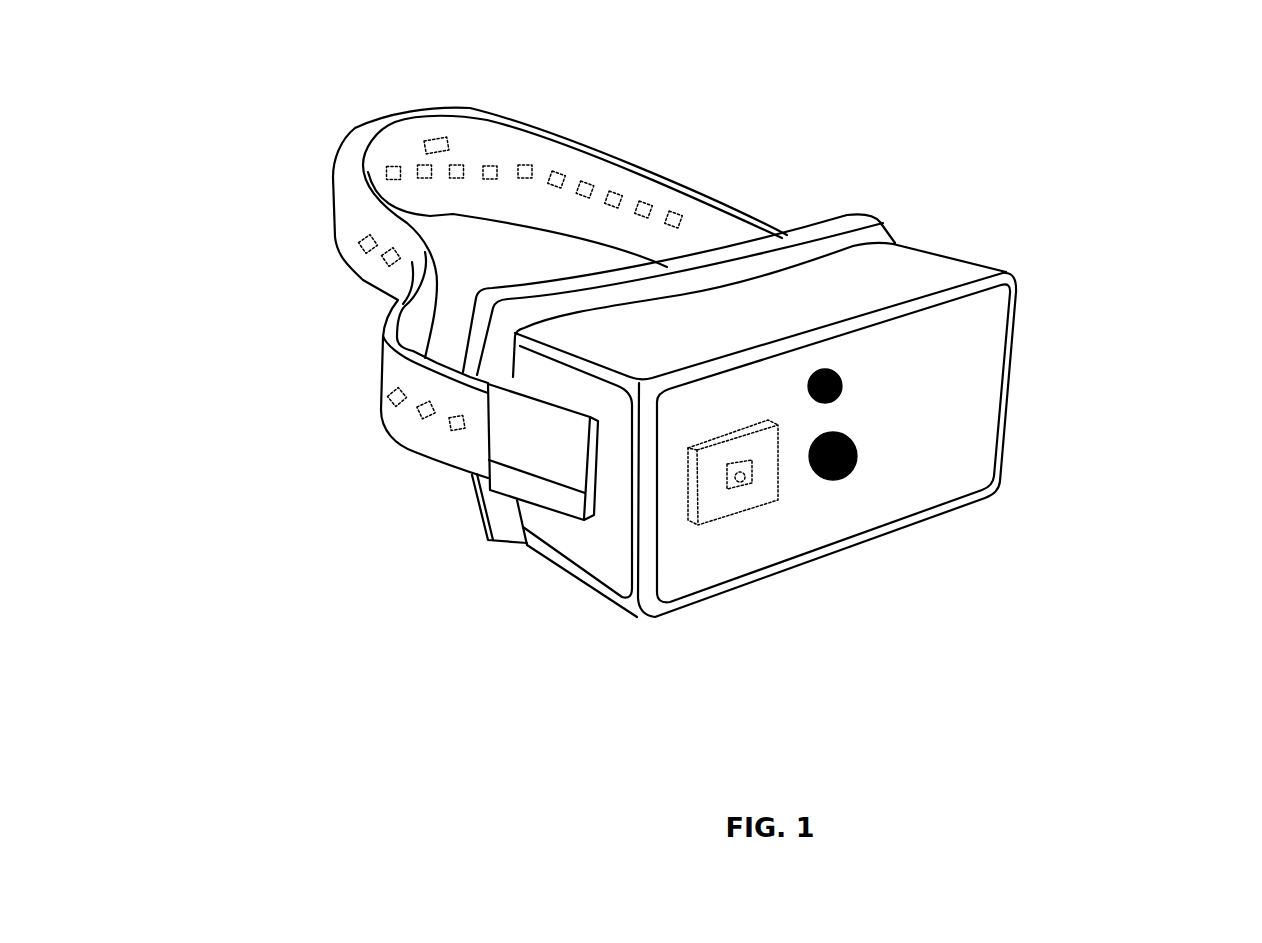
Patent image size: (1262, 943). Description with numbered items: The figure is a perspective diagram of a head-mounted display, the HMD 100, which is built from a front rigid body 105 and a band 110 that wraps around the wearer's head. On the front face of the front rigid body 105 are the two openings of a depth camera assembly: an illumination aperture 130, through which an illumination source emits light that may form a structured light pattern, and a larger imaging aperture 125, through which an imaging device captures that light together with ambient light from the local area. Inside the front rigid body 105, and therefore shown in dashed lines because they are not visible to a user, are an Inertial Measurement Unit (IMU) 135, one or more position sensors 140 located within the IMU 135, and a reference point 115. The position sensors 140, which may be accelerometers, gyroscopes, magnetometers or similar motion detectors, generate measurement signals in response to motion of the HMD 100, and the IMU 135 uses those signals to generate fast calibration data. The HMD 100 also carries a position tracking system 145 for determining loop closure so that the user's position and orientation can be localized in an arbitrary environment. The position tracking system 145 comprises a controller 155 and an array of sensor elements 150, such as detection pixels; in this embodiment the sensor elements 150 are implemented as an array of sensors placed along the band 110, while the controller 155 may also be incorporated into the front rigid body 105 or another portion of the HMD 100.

The head-mounted display (HMD) 100 is at (1092, 96).
The front rigid body 105 is at (1012, 272).
The band 110 is at (680, 183).
The reference point 115 is at (742, 483).
The imaging aperture 125 is at (857, 458).
The illumination aperture 130 is at (840, 374).
The Inertial Measurement Unit (IMU) 135 is at (780, 492).
The position sensors 140 is at (729, 492).
The position tracking system 145 is at (416, 155).
The sensor elements 150 is at (289, 487).
The controller 155 is at (440, 146).